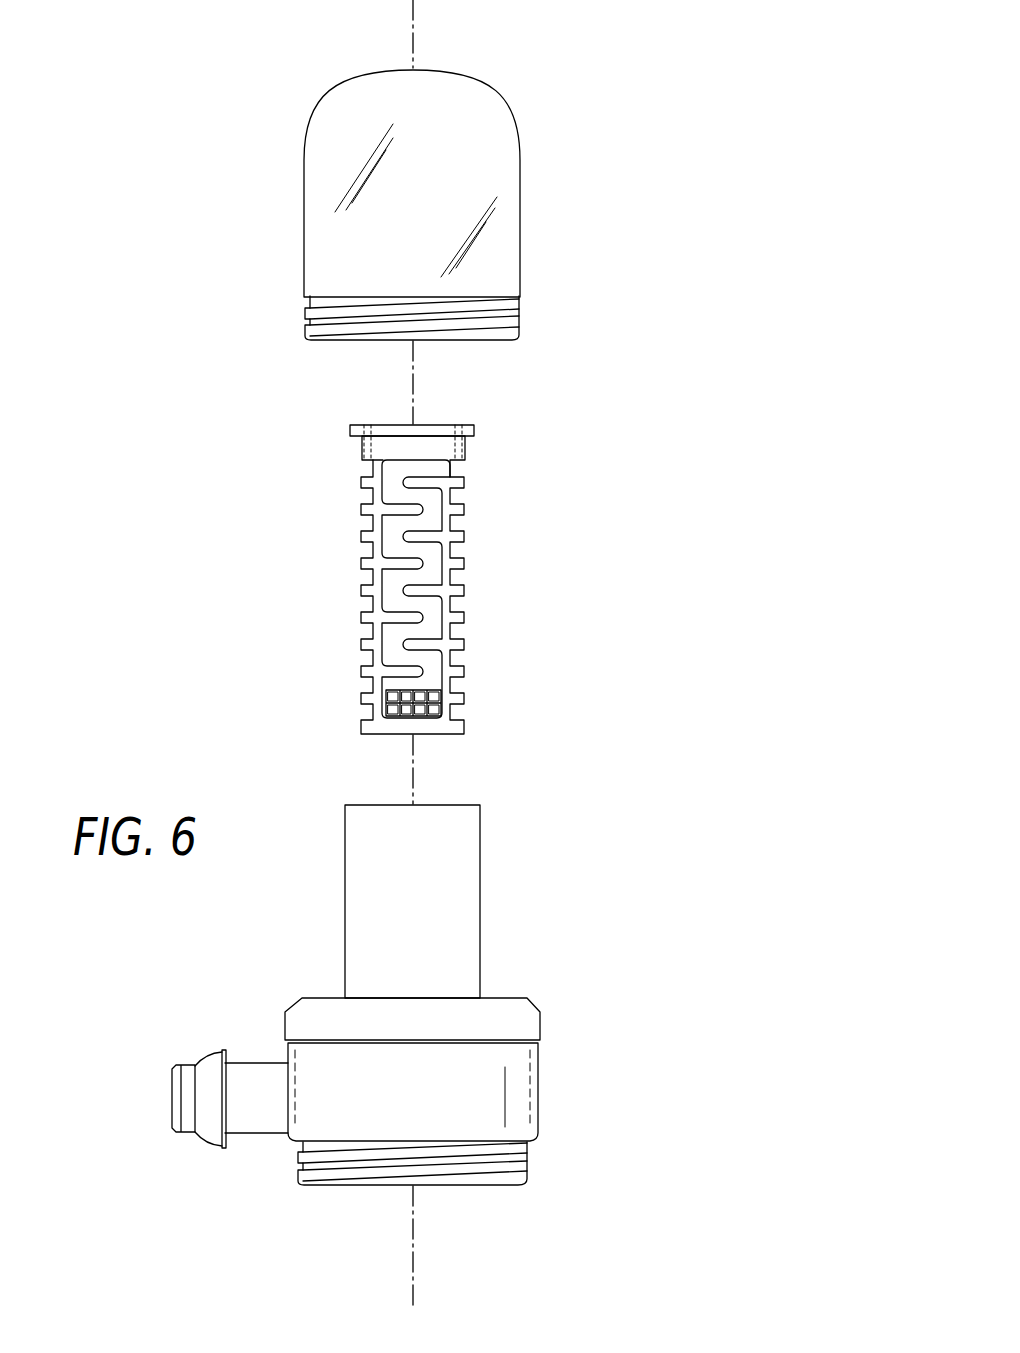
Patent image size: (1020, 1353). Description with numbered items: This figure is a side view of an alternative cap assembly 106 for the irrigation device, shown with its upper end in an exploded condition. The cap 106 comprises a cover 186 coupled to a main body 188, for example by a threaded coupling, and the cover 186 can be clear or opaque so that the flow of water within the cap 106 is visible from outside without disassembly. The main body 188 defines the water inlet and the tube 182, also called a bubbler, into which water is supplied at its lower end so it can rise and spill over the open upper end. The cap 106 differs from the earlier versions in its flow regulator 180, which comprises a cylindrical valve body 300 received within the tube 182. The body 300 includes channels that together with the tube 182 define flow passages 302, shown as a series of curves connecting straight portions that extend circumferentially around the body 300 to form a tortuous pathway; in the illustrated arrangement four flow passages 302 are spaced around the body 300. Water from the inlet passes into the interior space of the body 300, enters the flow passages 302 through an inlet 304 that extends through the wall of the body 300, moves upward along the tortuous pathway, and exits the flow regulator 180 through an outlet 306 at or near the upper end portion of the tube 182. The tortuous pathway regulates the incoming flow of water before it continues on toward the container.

The cap assembly 106 is at (485, 652).
The cover 186 is at (483, 155).
The flow regulator 180 is at (516, 679).
The cylindrical valve body 300 is at (477, 547).
The outlet 306 is at (457, 424).
The flow passages 302 is at (455, 556).
The inlet 304 is at (418, 698).
The tube 182 is at (457, 853).
The main body 188 is at (567, 1038).